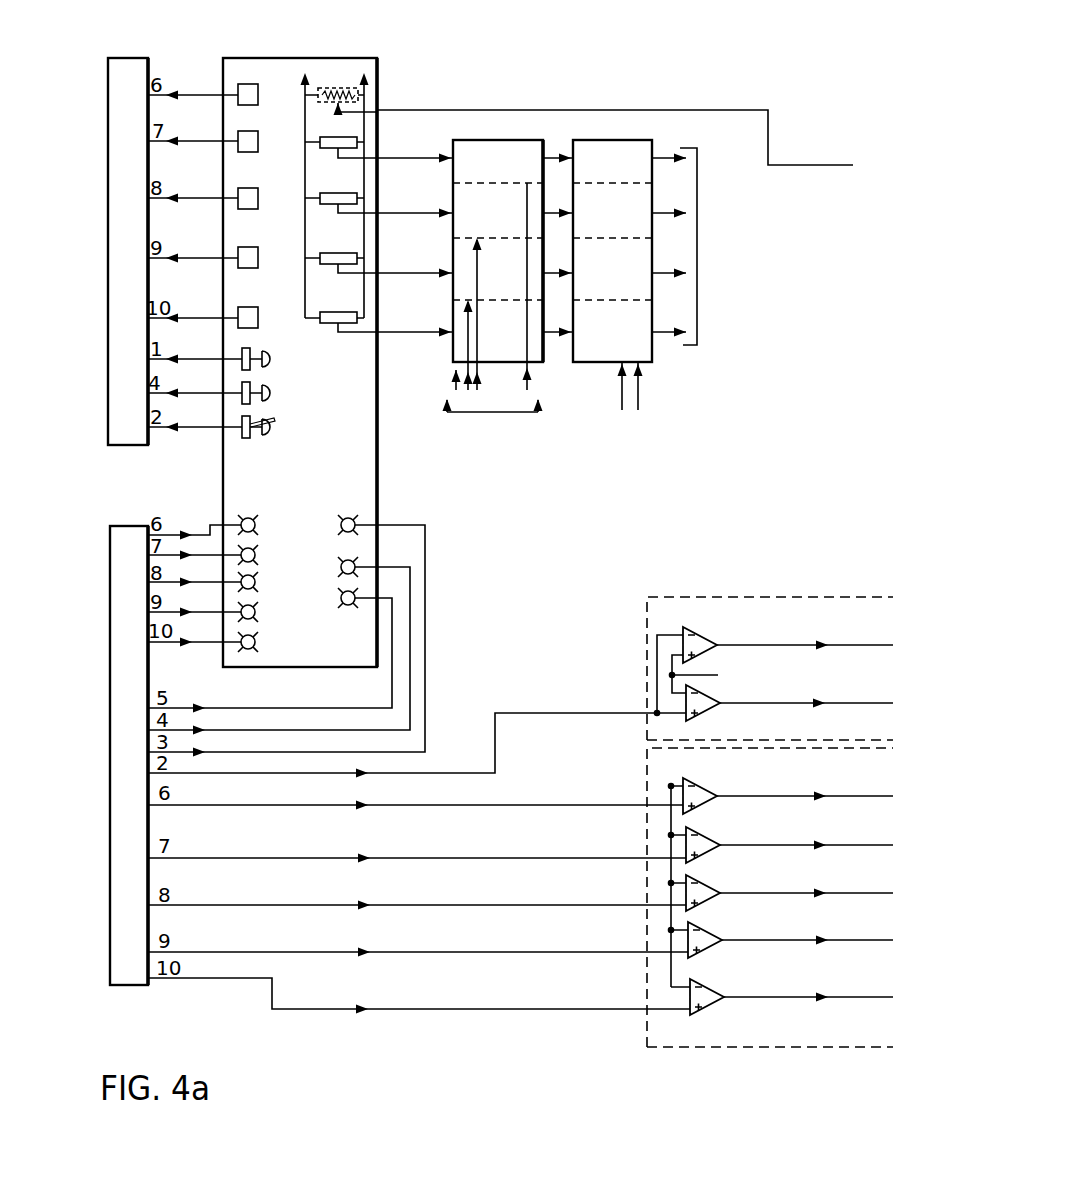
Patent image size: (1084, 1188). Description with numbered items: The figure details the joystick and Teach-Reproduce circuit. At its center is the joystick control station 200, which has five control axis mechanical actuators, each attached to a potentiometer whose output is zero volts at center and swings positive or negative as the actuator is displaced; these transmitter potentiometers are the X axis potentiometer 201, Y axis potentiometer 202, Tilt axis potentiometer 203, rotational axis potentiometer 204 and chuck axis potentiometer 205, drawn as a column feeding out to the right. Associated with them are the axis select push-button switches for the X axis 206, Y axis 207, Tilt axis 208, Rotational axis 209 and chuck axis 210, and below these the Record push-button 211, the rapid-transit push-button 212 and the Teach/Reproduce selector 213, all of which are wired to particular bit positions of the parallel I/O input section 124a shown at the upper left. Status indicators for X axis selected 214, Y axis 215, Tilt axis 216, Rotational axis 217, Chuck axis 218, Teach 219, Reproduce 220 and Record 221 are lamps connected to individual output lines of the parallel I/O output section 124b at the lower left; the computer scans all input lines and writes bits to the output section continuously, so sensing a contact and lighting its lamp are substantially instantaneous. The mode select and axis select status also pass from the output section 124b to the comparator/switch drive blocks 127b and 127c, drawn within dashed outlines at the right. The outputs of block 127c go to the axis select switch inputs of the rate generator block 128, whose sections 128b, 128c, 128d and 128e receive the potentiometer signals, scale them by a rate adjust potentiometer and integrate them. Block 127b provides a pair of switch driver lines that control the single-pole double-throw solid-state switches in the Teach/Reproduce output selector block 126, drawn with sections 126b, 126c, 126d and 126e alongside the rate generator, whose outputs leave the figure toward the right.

The parallel I/O input section 124a is at (108, 70).
The parallel I/O output section 124b is at (110, 540).
The joystick control station 200 is at (298, 58).
The X axis transmitter potentiometer 201 is at (350, 86).
The Y axis transmitter potentiometer 202 is at (350, 135).
The Tilt axis transmitter potentiometer 203 is at (350, 191).
The rotational axis transmitter potentiometer 204 is at (350, 251).
The chuck axis transmitter potentiometer 205 is at (350, 310).
The X axis select push-button switch 206 is at (238, 88).
The Y axis select push-button switch 207 is at (238, 138).
The Tilt axis select push-button switch 208 is at (238, 194).
The Rotational axis select push-button switch 209 is at (238, 254).
The chuck axis select push-button switch 210 is at (238, 312).
The Record push-button 211 is at (242, 355).
The rapid-transit push-button 212 is at (242, 390).
The Teach/Reproduce selector 213 is at (242, 420).
The X axis selected indicator 214 is at (255, 525).
The Y axis indicator 215 is at (255, 555).
The Tilt axis indicator 216 is at (255, 582).
The Rotational axis indicator 217 is at (255, 612).
The Chuck axis indicator 218 is at (255, 646).
The Teach indicator 219 is at (345, 514).
The Reproduce indicator 220 is at (341, 567).
The Record indicator 221 is at (350, 608).
The rate generator block 128 is at (493, 277).
The rate generator section 128b is at (498, 161).
The rate generator section 128c is at (498, 210).
The rate generator section 128d is at (498, 269).
The rate generator section 128e is at (503, 362).
The Teach/Reproduce output selector block 126 is at (625, 275).
The output selector section 126b is at (612, 161).
The output selector section 126c is at (612, 210).
The output selector section 126d is at (612, 269).
The output selector section 126e is at (595, 362).
The comparator/switch drive block 127b is at (647, 664).
The comparator/switch drive block 127c is at (647, 1025).